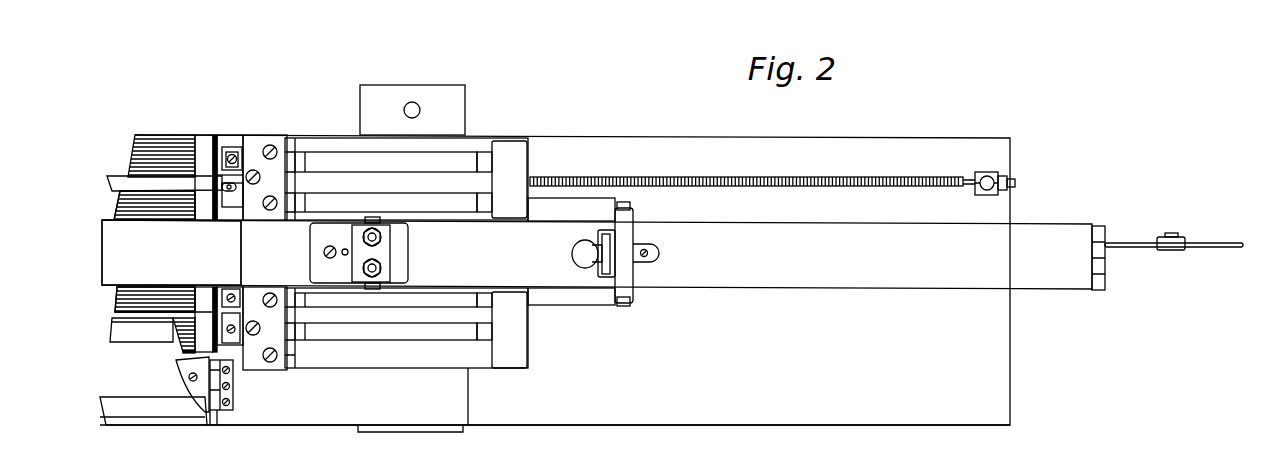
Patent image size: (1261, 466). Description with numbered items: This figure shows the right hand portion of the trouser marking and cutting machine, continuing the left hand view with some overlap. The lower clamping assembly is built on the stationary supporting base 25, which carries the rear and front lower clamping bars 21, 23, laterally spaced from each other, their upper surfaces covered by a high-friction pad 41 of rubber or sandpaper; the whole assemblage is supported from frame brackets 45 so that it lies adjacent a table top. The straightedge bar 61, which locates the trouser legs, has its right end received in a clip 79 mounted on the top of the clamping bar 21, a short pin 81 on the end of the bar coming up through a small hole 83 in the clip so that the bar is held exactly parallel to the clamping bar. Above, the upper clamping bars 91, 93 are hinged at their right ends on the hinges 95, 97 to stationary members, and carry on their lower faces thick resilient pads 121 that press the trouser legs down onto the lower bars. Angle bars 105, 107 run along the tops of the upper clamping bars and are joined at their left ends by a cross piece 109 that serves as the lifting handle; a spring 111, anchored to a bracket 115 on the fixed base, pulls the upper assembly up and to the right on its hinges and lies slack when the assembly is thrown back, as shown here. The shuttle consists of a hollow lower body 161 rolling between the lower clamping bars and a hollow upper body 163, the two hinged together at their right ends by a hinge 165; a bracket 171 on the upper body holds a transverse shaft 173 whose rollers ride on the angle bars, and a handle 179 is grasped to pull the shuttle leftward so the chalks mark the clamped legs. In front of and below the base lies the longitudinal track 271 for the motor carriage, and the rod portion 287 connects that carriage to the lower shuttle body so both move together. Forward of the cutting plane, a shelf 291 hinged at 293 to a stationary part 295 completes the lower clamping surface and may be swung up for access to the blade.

The lower clamping bar 21 is at (162, 213).
The lower clamping bar 23 is at (143, 292).
The supporting base 25 is at (1000, 210).
The friction pad 41 is at (167, 147).
The supporting bracket 45 is at (453, 108).
The bar 61 is at (112, 182).
The clip 79 is at (232, 206).
The pin 81 is at (238, 185).
The hole 83 is at (238, 188).
The upper clamping bar 91 is at (528, 138).
The upper clamping bar 93 is at (530, 368).
The hinge 95 is at (288, 219).
The hinge 97 is at (287, 371).
The angle bar 105 is at (630, 204).
The angle bar 107 is at (625, 307).
The cross piece 109 is at (628, 278).
The spring 111 is at (813, 177).
The bracket 115 is at (1008, 173).
The resilient pad 121 is at (399, 198).
The lower shuttle body 161 is at (110, 236).
The upper shuttle body 163 is at (246, 262).
The hinge 165 is at (1098, 273).
The bracket 171 is at (386, 253).
The transverse shaft 173 is at (382, 224).
The handle 179 is at (572, 258).
The longitudinal track 271 is at (121, 402).
The connecting rod 287 is at (1122, 238).
The shelf 291 is at (187, 352).
The hinge 293 is at (218, 412).
The stationary part 295 is at (325, 412).